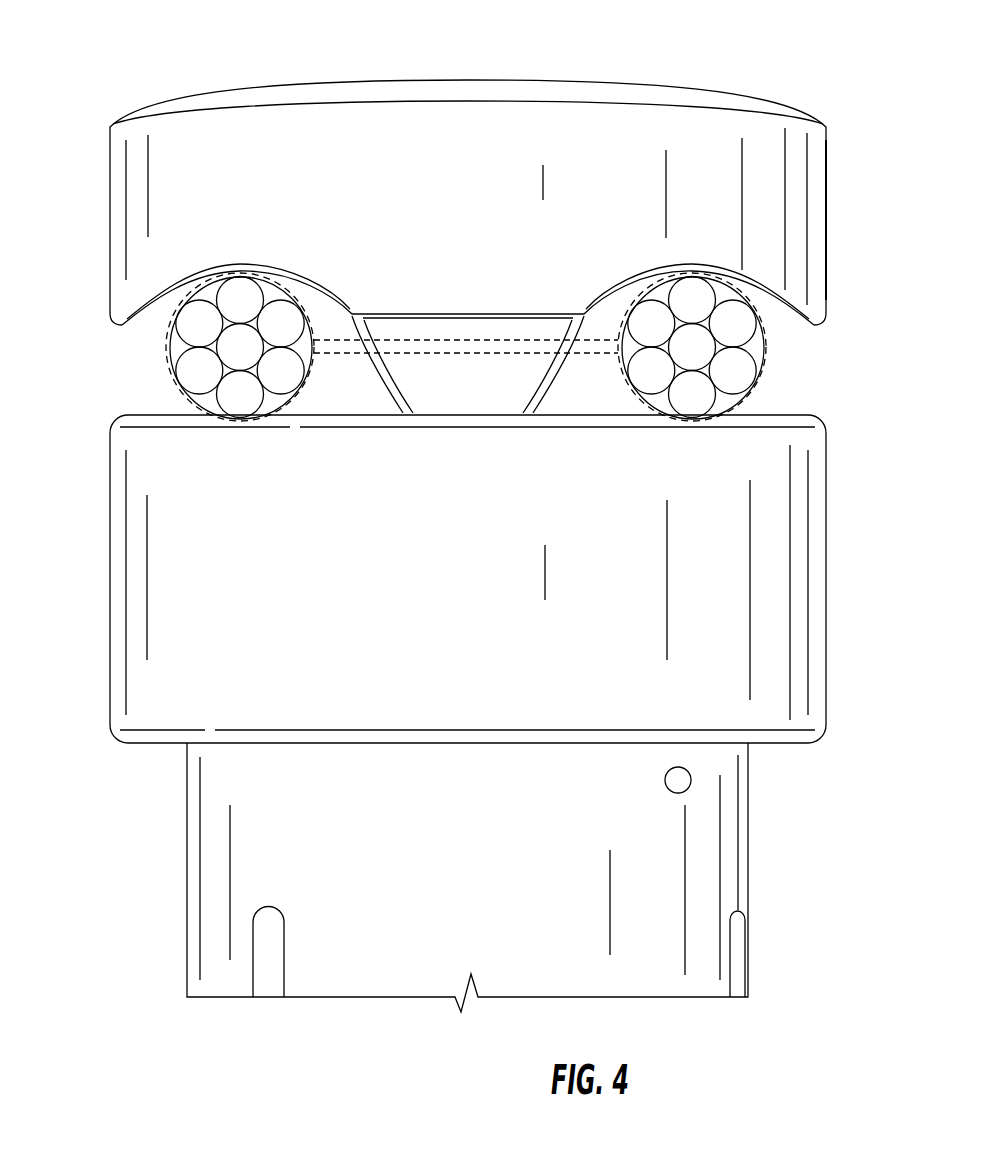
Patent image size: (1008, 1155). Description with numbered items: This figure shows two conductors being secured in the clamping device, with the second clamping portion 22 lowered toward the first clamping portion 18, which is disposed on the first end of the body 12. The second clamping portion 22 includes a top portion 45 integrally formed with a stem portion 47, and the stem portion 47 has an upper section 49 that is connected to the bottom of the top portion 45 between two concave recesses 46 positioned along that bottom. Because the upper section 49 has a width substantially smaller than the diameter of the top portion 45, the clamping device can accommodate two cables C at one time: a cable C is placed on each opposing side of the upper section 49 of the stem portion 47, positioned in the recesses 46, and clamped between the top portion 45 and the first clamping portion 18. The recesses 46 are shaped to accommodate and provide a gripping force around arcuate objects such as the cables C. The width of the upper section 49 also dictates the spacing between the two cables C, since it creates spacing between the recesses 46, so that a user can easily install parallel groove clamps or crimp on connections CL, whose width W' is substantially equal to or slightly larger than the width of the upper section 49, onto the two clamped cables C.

The body 12 is at (481, 847).
The first clamping portion 18 is at (481, 590).
The second clamping portion 22 is at (481, 239).
The top portion 45 is at (818, 212).
The concave recesses 46 is at (163, 332).
The stem portion 47 is at (366, 393).
The upper section 49 is at (481, 390).
The cables C is at (182, 368).
The parallel groove clamps or crimp on connections CL is at (747, 398).
The width W' is at (466, 182).